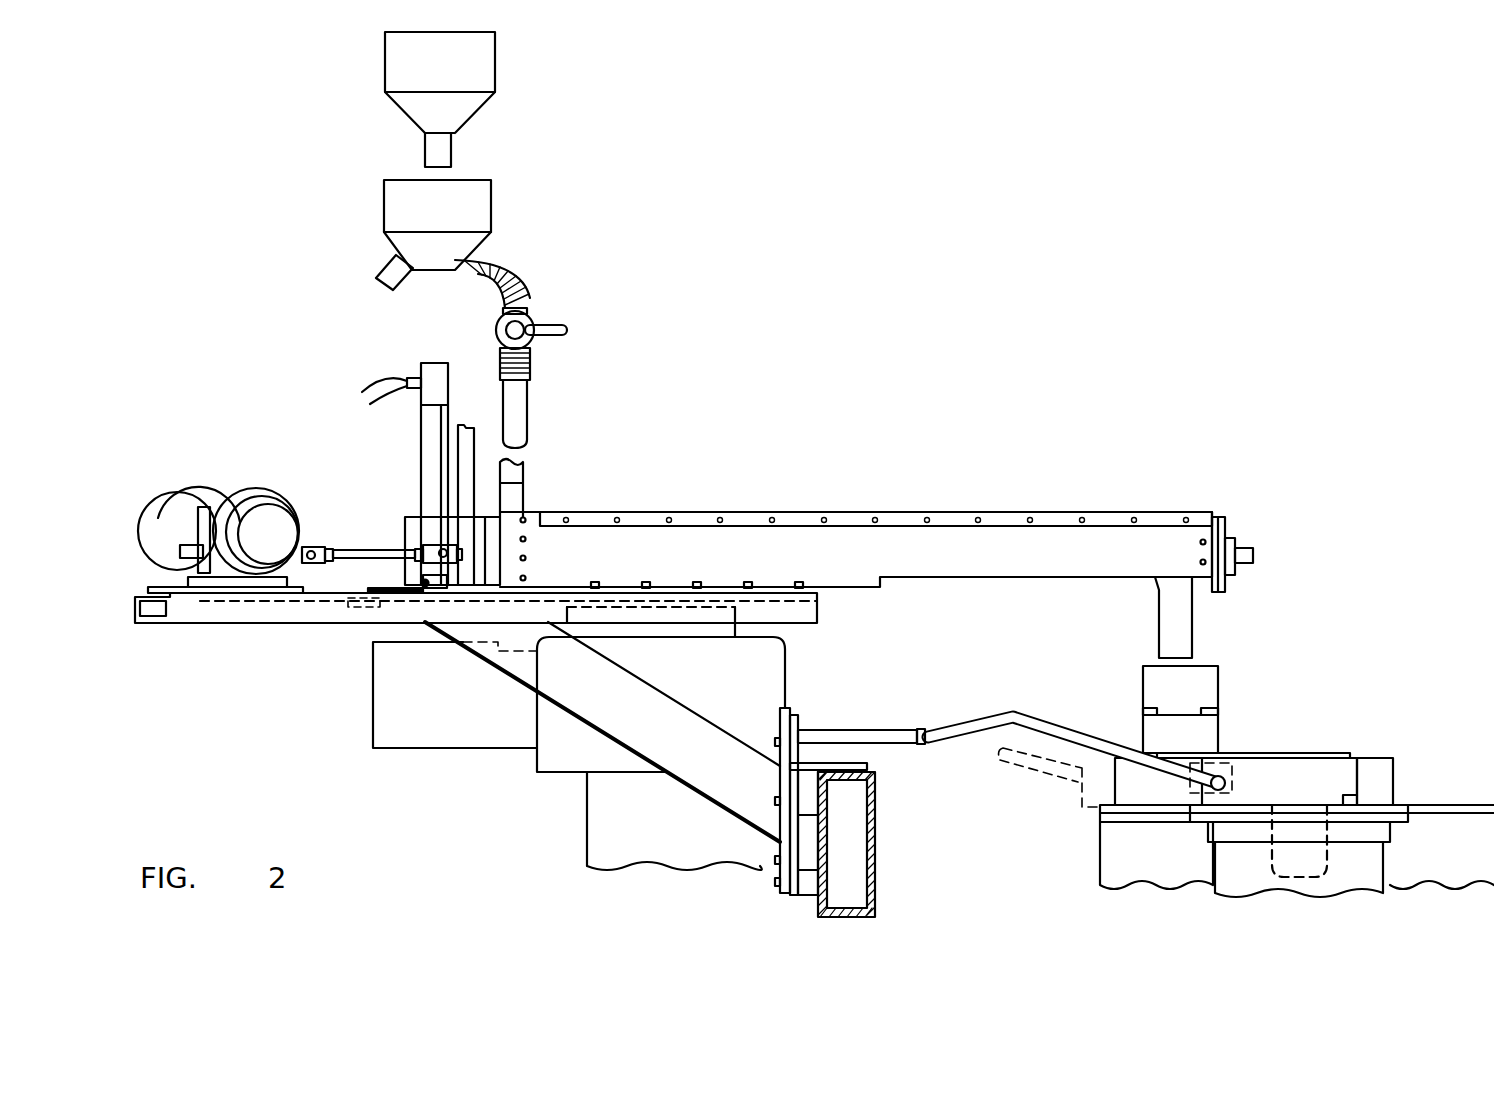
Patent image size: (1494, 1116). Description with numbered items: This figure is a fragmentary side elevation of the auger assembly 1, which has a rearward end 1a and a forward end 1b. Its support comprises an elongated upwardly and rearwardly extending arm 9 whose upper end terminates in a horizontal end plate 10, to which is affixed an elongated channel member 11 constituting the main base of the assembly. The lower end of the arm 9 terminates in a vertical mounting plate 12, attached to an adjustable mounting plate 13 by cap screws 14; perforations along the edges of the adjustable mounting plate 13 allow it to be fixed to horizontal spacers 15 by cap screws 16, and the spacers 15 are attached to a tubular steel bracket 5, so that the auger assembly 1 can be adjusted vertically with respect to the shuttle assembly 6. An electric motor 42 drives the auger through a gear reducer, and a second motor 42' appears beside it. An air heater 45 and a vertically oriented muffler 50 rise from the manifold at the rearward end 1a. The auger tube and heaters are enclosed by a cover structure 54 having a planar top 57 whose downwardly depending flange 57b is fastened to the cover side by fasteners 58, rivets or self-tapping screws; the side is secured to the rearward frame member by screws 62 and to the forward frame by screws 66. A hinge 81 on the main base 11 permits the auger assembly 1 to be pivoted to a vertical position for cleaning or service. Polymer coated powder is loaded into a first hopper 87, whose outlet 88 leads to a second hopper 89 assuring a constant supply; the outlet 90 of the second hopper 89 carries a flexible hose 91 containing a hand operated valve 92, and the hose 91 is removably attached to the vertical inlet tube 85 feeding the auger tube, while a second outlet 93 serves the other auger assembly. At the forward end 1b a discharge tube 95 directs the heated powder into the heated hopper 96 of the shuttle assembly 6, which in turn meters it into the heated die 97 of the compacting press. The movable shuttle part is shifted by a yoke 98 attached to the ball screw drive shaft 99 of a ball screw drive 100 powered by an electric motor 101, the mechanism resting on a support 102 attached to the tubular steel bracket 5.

The auger assembly 1 is at (790, 512).
The rearward end 1a is at (398, 512).
The forward end 1b is at (1225, 515).
The tubular steel bracket 5 is at (877, 838).
The shuttle assembly 6 is at (1315, 752).
The arm 9 is at (605, 723).
The horizontal end plate 10 is at (380, 600).
The channel member 11 is at (218, 612).
The vertical mounting plate 12 is at (780, 815).
The adjustable mounting plate 13 is at (780, 875).
The cap screws 14 is at (775, 860).
The horizontal spacers 15 is at (810, 883).
The cap screws 16 is at (777, 884).
The prime mover 42 is at (252, 540).
The second drive motor 42' is at (189, 506).
The air heater 45 is at (427, 432).
The muffler 50 is at (456, 462).
The cover structure 54 is at (898, 512).
The top 57 is at (1022, 513).
The flange 57b is at (955, 522).
The fasteners 58 is at (727, 510).
The screws 62 is at (532, 557).
The screws 66 is at (1198, 562).
The hinge 81 is at (385, 583).
The vertical inlet tube 85 is at (528, 430).
The first hopper 87 is at (478, 65).
The outlet 88 is at (438, 153).
The second hopper 89 is at (478, 205).
The outlet 90 is at (470, 265).
The flexible hose 91 is at (518, 285).
The hand operated valve 92 is at (550, 330).
The second outlet 93 is at (385, 265).
The discharge tube 95 is at (1180, 630).
The heated hopper 96 is at (1207, 692).
The heated die 97 is at (1325, 860).
The yoke 98 is at (1068, 727).
The ball screw drive shaft 99 is at (843, 728).
The ball screw drive 100 is at (772, 670).
The electric motor 101 is at (450, 740).
The support 102 is at (603, 832).